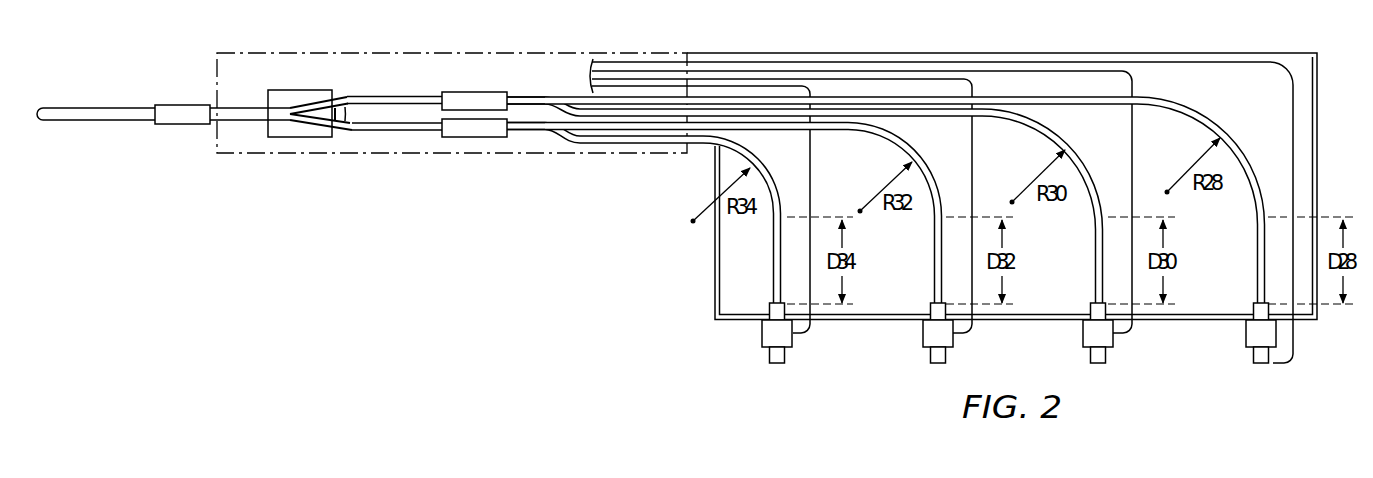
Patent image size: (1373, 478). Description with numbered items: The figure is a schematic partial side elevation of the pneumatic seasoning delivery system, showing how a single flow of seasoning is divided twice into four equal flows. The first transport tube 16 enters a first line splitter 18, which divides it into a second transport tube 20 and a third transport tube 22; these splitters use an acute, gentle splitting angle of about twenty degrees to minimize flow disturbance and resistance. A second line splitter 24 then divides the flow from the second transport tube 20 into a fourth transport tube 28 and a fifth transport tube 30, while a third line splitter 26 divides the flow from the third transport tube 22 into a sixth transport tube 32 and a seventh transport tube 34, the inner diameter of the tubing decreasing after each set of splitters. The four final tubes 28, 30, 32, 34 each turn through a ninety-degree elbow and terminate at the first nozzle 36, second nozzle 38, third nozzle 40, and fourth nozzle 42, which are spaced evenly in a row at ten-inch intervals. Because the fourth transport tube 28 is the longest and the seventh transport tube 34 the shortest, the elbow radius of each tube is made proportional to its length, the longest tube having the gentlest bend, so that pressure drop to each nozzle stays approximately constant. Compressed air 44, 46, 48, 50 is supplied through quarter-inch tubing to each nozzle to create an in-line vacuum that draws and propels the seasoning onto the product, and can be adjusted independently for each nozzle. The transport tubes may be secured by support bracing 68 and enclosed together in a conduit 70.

The first transport tube 16 is at (113, 108).
The first line splitter 18 is at (300, 137).
The second transport tube 20 is at (411, 96).
The third transport tube 22 is at (425, 131).
The second line splitter 24 is at (552, 97).
The third line splitter 26 is at (546, 135).
The fourth transport tube 28 is at (1212, 114).
The fifth transport tube 30 is at (936, 118).
The sixth transport tube 32 is at (607, 130).
The seventh transport tube 34 is at (642, 144).
The first nozzle 36 is at (1245, 337).
The second nozzle 38 is at (1083, 337).
The third nozzle 40 is at (923, 337).
The fourth nozzle 42 is at (762, 337).
The compressed air 44 is at (1291, 132).
The compressed air 46 is at (1133, 152).
The compressed air 48 is at (974, 160).
The compressed air 50 is at (813, 172).
The support bracing 68 is at (714, 260).
The conduit 70 is at (294, 53).